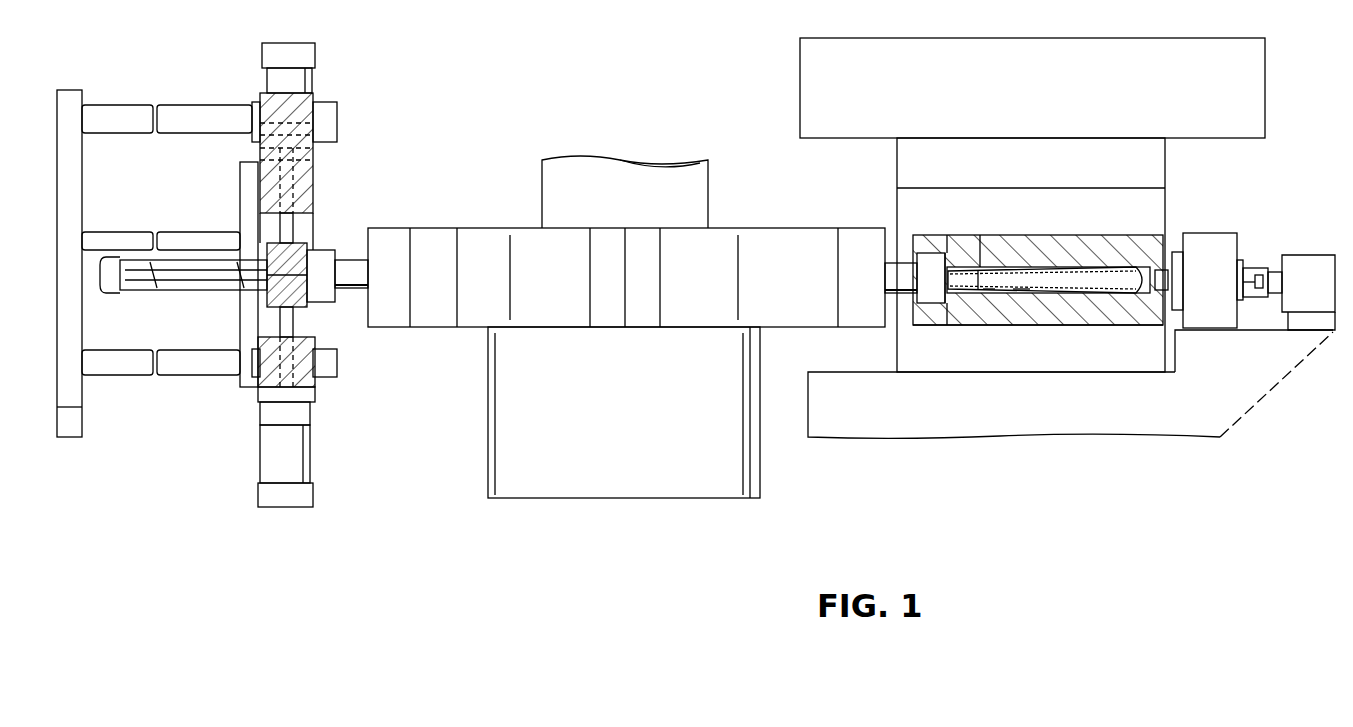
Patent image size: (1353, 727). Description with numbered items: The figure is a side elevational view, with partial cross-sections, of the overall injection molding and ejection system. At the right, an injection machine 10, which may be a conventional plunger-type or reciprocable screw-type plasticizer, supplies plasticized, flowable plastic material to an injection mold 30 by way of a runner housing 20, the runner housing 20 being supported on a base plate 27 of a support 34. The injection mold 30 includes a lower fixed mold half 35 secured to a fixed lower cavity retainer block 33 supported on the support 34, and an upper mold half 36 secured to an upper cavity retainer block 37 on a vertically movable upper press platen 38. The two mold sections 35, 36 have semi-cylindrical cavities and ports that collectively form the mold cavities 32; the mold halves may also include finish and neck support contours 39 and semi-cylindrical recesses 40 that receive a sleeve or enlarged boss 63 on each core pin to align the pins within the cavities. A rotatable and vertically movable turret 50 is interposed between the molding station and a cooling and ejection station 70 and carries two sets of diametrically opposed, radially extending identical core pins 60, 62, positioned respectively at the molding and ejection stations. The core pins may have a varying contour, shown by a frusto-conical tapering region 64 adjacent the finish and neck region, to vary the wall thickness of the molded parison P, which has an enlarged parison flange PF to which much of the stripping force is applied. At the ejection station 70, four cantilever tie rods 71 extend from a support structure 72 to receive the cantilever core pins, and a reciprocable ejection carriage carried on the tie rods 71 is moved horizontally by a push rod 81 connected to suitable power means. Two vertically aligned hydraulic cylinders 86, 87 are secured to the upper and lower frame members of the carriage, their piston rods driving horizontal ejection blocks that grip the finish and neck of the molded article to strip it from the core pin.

The injection machine 10 is at (1321, 248).
The runner housing 20 is at (1219, 226).
The base plate 27 is at (1228, 362).
The injection mold 30 is at (1180, 181).
The mold cavities 32 is at (1110, 292).
The lower cavity retainer block 33 is at (1005, 365).
The support 34 is at (947, 425).
The lower fixed mold half 35 is at (1058, 315).
The upper mold half 36 is at (1152, 238).
The upper cavity retainer block 37 is at (1157, 197).
The upper press platen 38 is at (1052, 95).
The finish and neck support contours 39 is at (973, 265).
The semi-cylindrical recesses 40 is at (937, 240).
The turret 50 is at (712, 150).
The core pins 60 is at (1058, 267).
The core pins 62 is at (350, 270).
The sleeve or enlarged boss 63 is at (917, 238).
The frusto-conical tapering region 64 is at (996, 264).
The cooling and ejection station 70 is at (337, 505).
The cantilever tie rods 71 is at (337, 121).
The support structure 72 is at (82, 93).
The push rod 81 is at (178, 232).
The hydraulic cylinder 86 is at (315, 55).
The hydraulic cylinder 87 is at (307, 457).
The parison P is at (1013, 290).
The parison flange PF is at (982, 289).